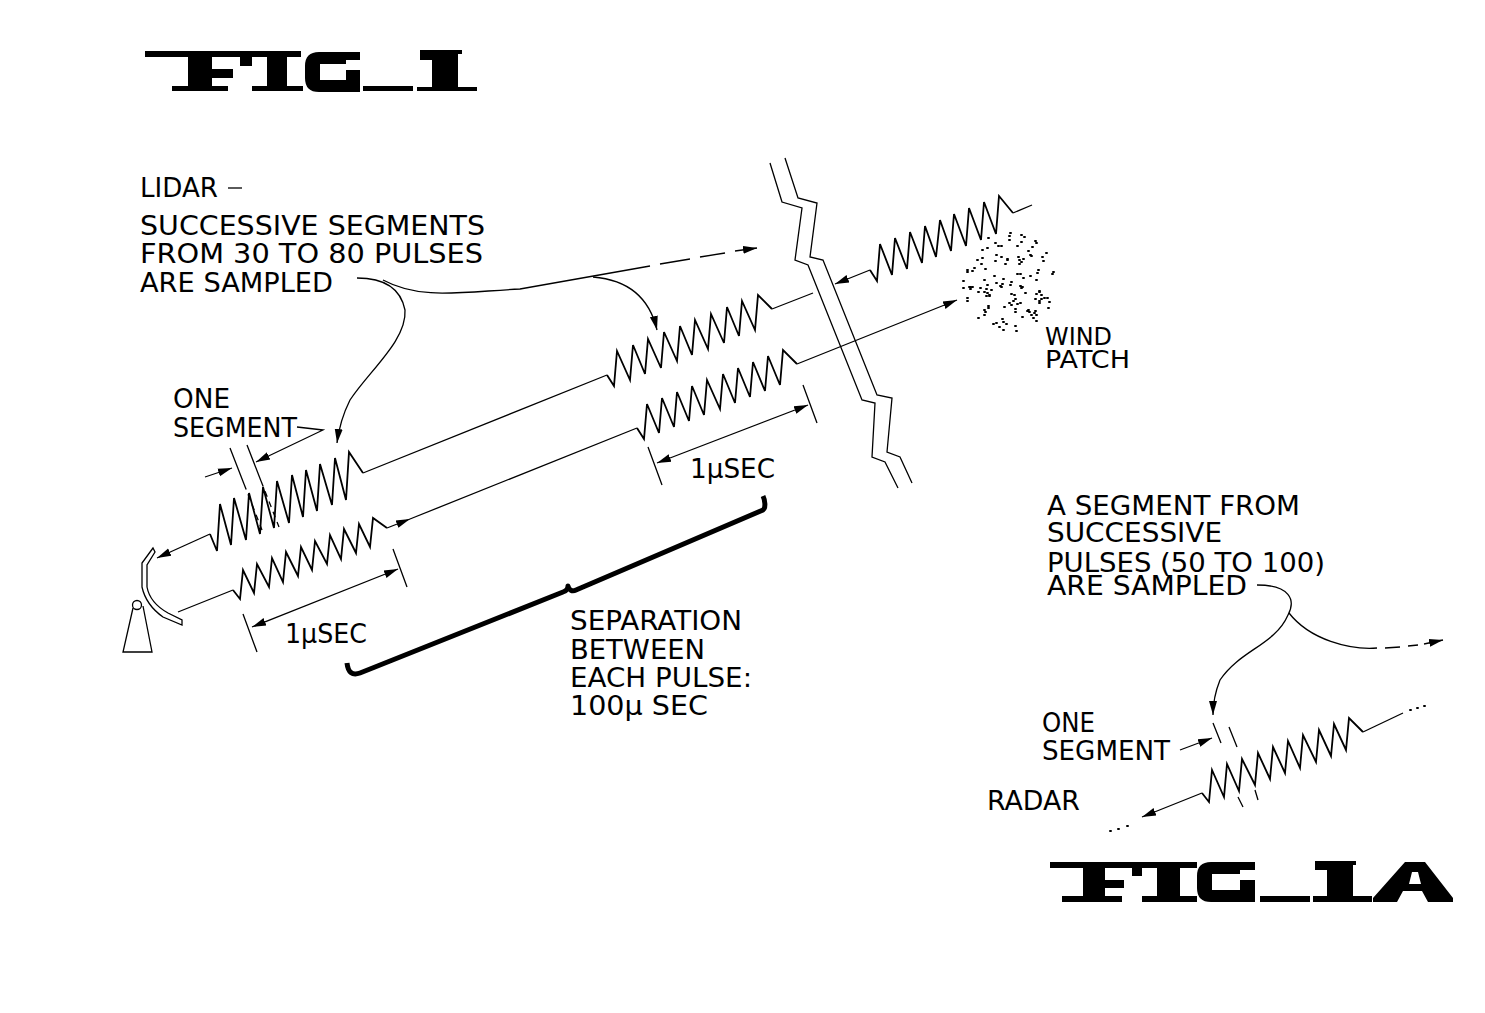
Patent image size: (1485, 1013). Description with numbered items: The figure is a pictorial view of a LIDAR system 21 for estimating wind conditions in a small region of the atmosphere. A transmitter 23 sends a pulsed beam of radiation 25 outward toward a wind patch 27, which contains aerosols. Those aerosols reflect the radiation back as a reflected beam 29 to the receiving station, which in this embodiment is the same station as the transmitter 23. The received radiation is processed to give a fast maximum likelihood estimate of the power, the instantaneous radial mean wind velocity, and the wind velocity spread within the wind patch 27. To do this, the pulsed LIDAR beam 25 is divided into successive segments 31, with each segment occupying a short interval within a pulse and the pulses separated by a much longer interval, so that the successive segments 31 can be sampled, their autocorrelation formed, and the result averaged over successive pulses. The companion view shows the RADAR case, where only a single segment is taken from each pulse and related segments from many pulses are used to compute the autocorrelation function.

In FIG. 1, the LIDAR system 21 is at (697, 223).
In FIG. 1, the transmitter 23 is at (188, 622).
In FIG. 1, the pulsed beam of radiation 25 is at (573, 462).
In FIG. 1, the wind patch 27 is at (1083, 308).
In FIG. 1, the reflected beam 29 is at (547, 387).
In FIG. 1A, the reflected beam 29 is at (1373, 737).
In FIG. 1, the successive segments 31 is at (243, 495).
In FIG. 1A, the successive segments 31 is at (1232, 728).